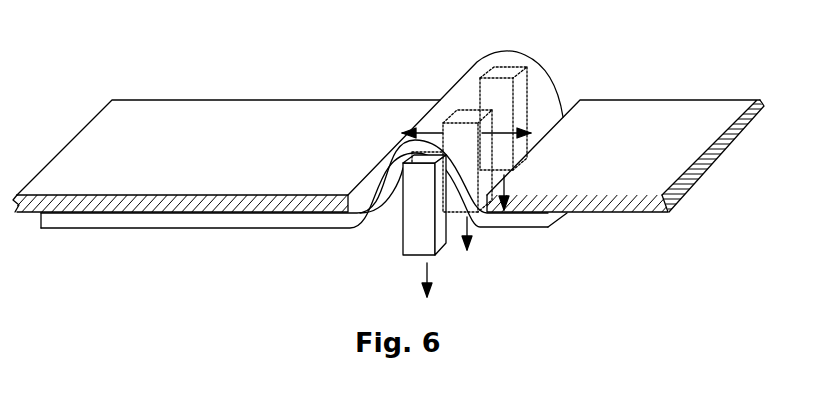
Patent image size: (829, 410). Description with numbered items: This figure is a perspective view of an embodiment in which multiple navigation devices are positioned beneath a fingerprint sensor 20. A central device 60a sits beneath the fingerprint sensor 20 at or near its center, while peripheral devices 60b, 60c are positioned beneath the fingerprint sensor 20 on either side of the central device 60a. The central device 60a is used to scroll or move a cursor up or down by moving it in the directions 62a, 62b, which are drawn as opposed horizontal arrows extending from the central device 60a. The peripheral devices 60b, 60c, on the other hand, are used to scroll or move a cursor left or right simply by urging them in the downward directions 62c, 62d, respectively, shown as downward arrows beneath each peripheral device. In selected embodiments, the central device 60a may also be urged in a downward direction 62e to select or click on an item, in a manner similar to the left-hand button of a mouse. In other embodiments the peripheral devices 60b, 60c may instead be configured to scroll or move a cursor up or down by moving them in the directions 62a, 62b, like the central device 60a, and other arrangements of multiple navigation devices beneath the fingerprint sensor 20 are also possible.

The fingerprint sensor 20 is at (278, 260).
The central device 60a is at (465, 112).
The peripheral device 60b is at (415, 218).
The peripheral device 60c is at (502, 70).
The direction 62a is at (505, 134).
The direction 62b is at (424, 132).
The downward direction 62c is at (430, 273).
The downward direction 62d is at (505, 187).
The downward direction 62e is at (472, 225).